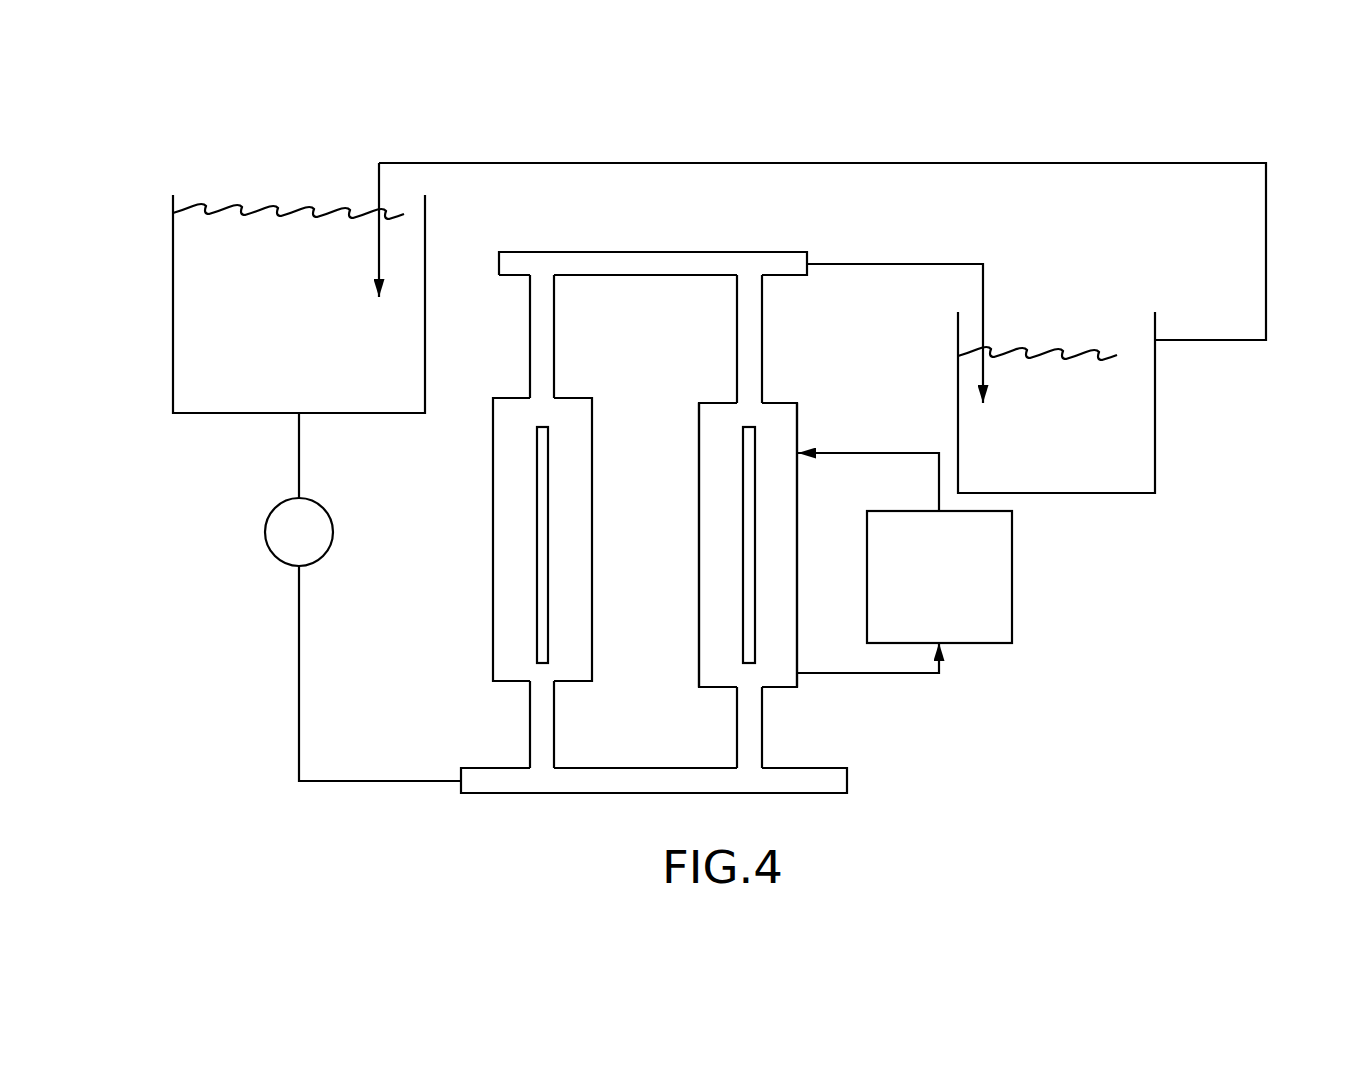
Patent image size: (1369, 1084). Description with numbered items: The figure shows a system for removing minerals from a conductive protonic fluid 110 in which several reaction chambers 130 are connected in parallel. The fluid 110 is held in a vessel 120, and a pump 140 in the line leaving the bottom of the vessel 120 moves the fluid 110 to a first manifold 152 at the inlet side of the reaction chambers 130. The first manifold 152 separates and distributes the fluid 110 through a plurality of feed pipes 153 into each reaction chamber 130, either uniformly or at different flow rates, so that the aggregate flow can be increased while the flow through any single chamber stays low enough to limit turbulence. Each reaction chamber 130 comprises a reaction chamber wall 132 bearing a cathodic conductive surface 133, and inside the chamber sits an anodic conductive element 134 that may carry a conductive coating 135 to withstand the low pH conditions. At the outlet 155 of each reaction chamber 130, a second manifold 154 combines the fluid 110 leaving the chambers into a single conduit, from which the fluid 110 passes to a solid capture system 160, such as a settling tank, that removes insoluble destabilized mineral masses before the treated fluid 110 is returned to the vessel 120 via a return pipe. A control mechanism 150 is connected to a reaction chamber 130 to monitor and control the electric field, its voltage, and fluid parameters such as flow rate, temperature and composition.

The conductive protonic fluid 110 is at (212, 365).
The vessel 120 is at (158, 232).
The reaction chamber 130 is at (482, 507).
The reaction chamber wall 132 is at (807, 687).
The conductive surface 133 is at (797, 485).
The conductive element 134 is at (725, 657).
The conductive coating 135 is at (742, 462).
The pump 140 is at (265, 547).
The control mechanism 150 is at (1020, 587).
The first manifold 152 is at (490, 793).
The feed pipes 153 is at (542, 722).
The second manifold 154 is at (572, 260).
The outlet 155 is at (555, 303).
The solid capture system 160 is at (1165, 402).